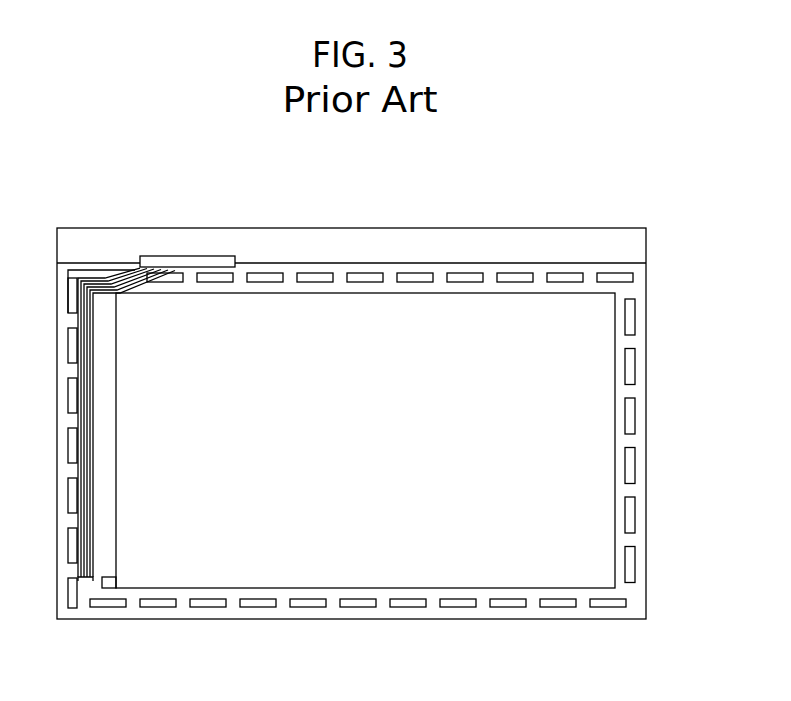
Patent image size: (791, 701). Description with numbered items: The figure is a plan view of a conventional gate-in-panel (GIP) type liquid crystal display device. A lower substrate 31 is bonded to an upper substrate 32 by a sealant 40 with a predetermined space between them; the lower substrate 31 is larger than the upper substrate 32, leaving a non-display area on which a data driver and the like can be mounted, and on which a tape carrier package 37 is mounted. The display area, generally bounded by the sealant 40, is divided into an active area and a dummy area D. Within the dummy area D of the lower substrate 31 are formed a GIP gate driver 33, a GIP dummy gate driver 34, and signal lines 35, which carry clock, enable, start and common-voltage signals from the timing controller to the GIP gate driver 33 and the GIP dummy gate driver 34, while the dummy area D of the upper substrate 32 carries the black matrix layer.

The lower substrate 31 is at (648, 247).
The upper substrate 32 is at (577, 263).
The GIP gate driver 33 is at (117, 458).
The GIP dummy gate driver 34 is at (116, 583).
The signal lines 35 is at (85, 580).
The tape carrier package 37 is at (199, 256).
The sealant 40 is at (358, 608).
The dummy area D is at (640, 490).